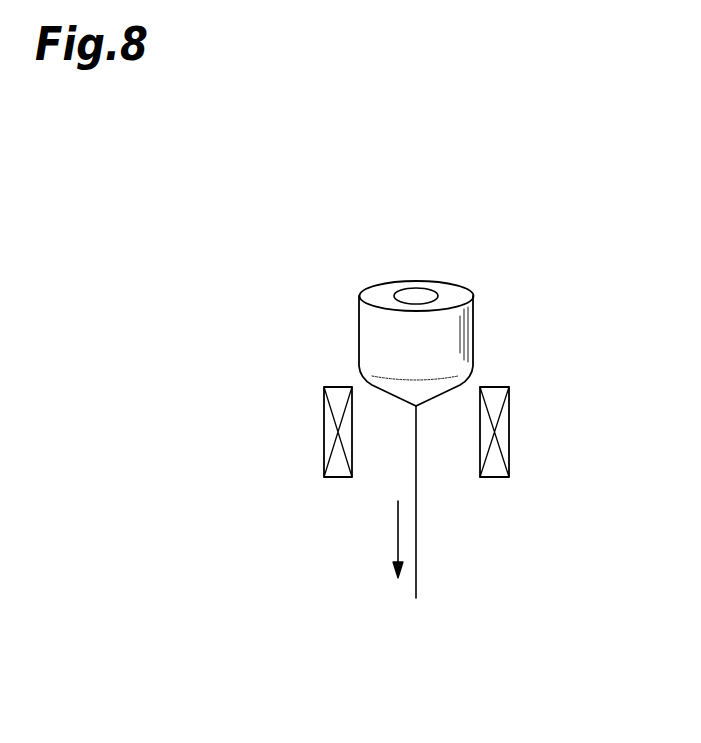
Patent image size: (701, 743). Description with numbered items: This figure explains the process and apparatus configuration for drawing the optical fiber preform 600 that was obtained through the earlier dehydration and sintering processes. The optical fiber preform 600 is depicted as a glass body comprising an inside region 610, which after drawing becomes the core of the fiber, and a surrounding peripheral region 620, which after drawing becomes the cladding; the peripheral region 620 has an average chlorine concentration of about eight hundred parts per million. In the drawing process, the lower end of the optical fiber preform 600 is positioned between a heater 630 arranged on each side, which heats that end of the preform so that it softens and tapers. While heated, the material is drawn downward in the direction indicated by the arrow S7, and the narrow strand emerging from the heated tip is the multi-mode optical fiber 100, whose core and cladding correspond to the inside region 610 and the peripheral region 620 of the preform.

The optical fiber preform 600 is at (478, 302).
The inside region 610 is at (413, 296).
The peripheral region 620 is at (377, 295).
The heater 630 is at (324, 430).
The multi-mode optical fiber 100 is at (427, 538).
The drawing direction S7 is at (398, 535).